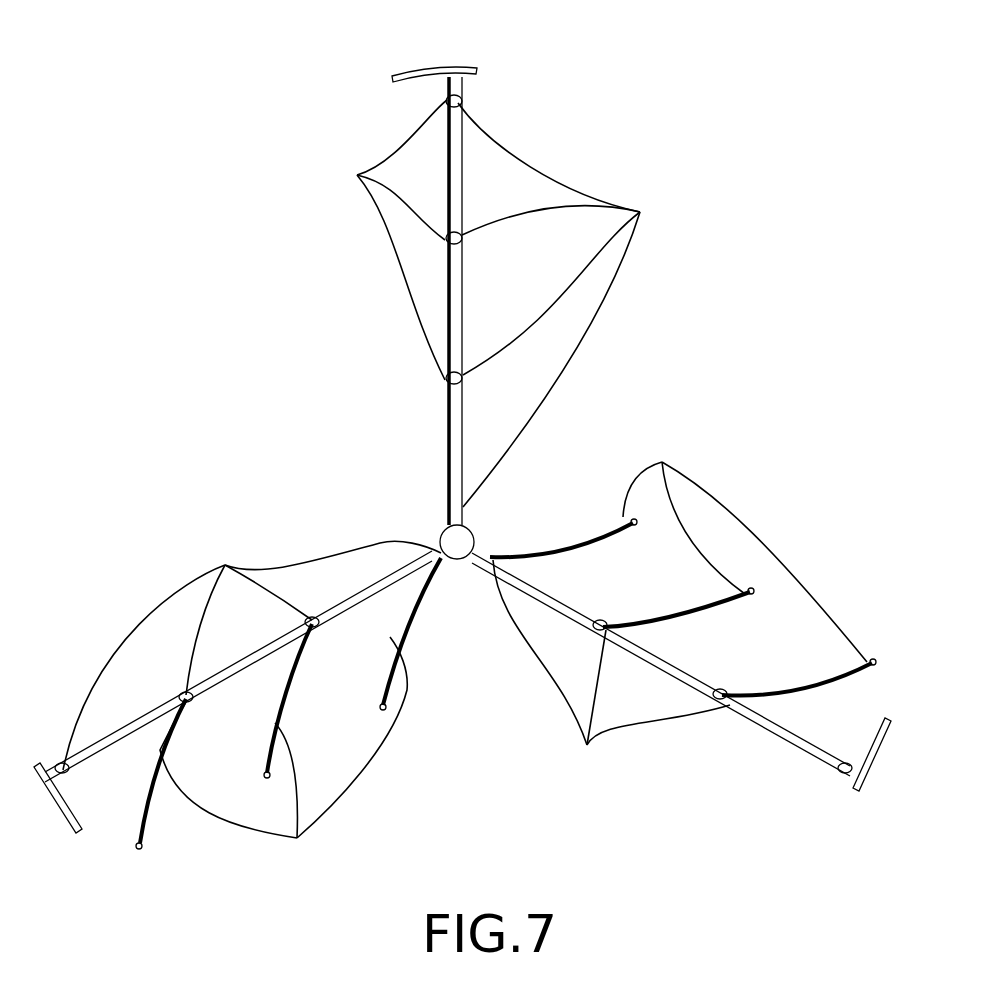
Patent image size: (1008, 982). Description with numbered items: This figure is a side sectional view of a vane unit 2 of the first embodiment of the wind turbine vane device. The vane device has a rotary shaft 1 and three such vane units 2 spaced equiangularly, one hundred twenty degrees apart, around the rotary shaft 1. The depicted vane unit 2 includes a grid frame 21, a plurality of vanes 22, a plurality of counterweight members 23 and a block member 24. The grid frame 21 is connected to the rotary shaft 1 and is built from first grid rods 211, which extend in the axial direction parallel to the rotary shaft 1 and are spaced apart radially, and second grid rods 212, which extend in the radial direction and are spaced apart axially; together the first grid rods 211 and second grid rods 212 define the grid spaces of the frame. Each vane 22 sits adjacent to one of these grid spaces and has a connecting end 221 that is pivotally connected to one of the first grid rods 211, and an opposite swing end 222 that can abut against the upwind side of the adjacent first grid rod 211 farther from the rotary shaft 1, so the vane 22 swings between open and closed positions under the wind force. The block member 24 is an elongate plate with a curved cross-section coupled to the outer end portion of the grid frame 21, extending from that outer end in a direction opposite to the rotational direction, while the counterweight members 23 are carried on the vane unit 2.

The rotary shaft 1 is at (457, 545).
The vane unit 2 is at (873, 797).
The grid frame 21 is at (514, 272).
The first grid rod 211 is at (383, 436).
The second grid rod 212 is at (457, 277).
The vane 22 is at (283, 758).
The connecting end 221 is at (611, 672).
The swing end 222 is at (745, 542).
The counterweight member 23 is at (382, 240).
The block member 24 is at (408, 73).